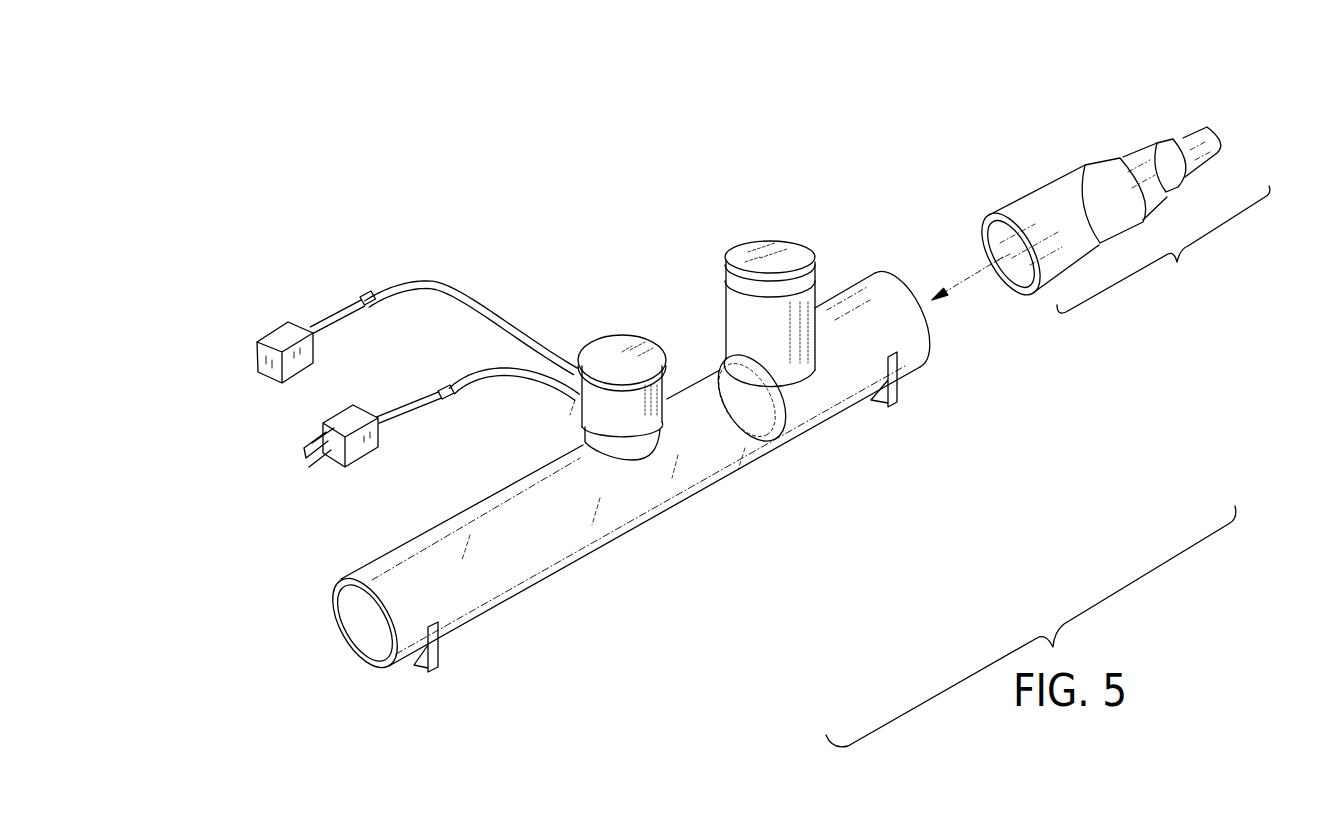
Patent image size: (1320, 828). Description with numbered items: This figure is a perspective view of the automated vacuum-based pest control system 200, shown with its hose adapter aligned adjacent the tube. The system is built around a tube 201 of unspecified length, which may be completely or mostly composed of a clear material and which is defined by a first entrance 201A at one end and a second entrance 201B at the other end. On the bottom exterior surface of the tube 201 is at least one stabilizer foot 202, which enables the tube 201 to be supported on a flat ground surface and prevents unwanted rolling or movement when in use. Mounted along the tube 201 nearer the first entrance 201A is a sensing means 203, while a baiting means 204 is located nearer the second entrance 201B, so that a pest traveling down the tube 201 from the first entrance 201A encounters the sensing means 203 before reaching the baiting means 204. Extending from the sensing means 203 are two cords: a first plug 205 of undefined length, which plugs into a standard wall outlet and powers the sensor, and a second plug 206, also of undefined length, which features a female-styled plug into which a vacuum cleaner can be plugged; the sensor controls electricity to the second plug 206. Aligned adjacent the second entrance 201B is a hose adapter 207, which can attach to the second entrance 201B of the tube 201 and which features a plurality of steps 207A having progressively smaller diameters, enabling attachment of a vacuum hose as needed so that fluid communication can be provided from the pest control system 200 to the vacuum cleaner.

The automated vacuum-based pest control system 200 is at (508, 178).
The tube 201 is at (700, 392).
The first entrance 201A is at (333, 600).
The second entrance 201B is at (903, 288).
The stabilizer foot 202 is at (443, 657).
The sensing means 203 is at (600, 348).
The baiting means 204 is at (758, 253).
The first plug 205 is at (348, 412).
The second plug 206 is at (403, 283).
The hose adapter 207 is at (1101, 193).
The steps 207A is at (1124, 158).